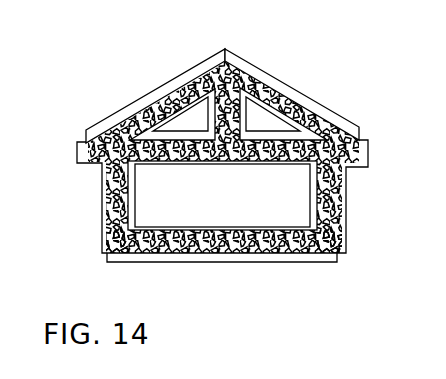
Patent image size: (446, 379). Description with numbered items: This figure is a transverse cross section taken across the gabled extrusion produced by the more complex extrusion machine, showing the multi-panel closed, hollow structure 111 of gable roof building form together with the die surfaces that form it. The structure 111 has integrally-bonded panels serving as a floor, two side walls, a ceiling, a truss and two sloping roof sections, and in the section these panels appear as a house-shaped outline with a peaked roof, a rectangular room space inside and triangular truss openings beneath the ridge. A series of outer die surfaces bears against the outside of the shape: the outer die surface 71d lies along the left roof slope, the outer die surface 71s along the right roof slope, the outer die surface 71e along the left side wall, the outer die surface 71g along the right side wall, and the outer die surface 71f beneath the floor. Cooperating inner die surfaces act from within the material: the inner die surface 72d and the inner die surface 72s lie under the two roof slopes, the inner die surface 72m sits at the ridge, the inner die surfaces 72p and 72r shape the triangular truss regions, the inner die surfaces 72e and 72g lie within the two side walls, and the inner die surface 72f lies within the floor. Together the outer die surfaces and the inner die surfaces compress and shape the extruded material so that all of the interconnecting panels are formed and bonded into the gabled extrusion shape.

The inner die surface 72p is at (180, 128).
The inner die surface 72r is at (248, 106).
The inner die surface 72m is at (178, 78).
The multi-panel closed hollow structure 111 is at (285, 95).
The outer die surface 71d is at (142, 102).
The inner die surface 72d is at (122, 115).
The outer die surface 71s is at (320, 113).
The inner die surface 72s is at (330, 114).
The outer die surface 71e is at (100, 200).
The inner die surface 72e is at (112, 212).
The inner die surface 72g is at (338, 186).
The outer die surface 71g is at (348, 232).
The inner die surface 72f is at (146, 226).
The outer die surface 71f is at (187, 259).